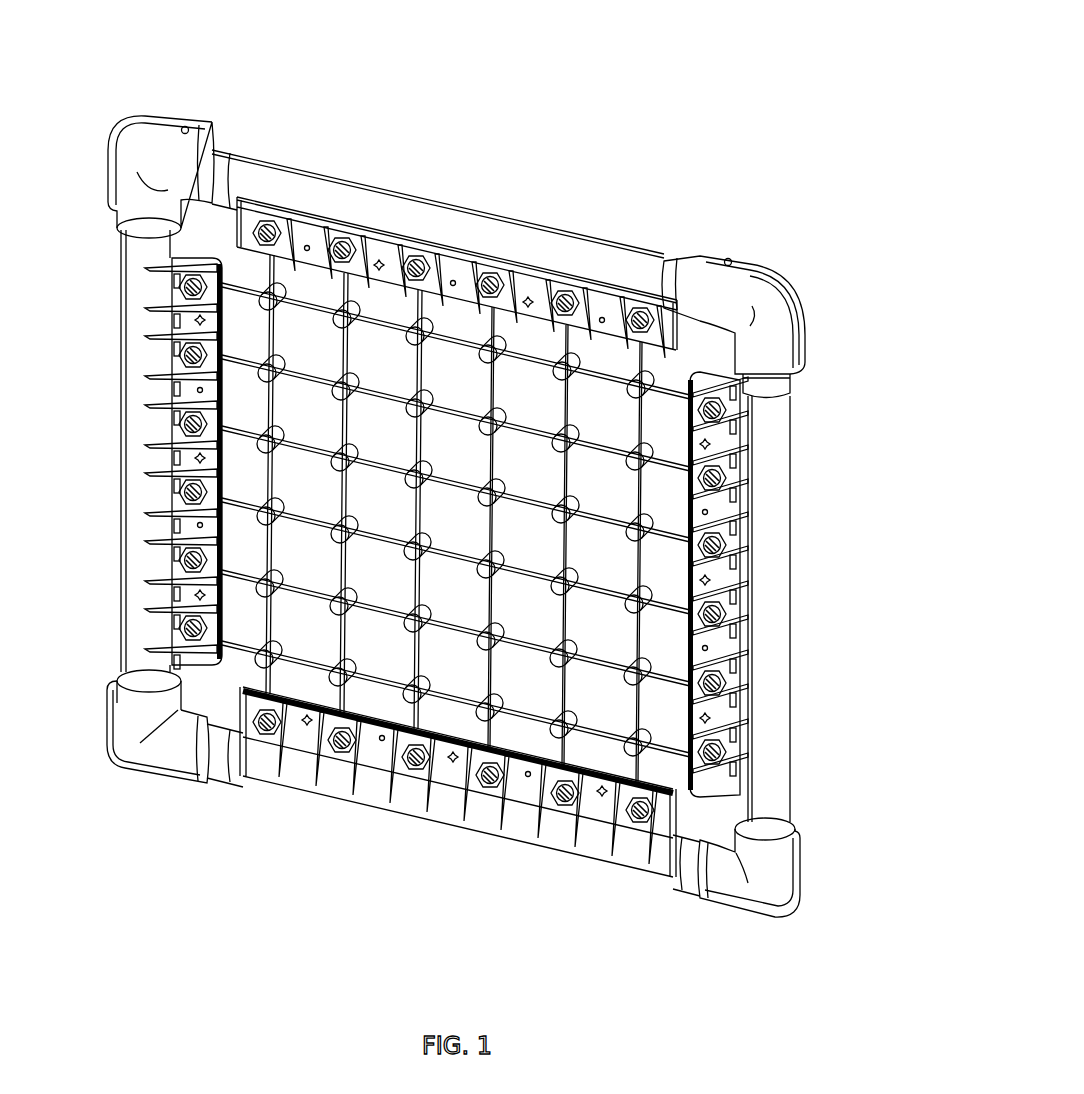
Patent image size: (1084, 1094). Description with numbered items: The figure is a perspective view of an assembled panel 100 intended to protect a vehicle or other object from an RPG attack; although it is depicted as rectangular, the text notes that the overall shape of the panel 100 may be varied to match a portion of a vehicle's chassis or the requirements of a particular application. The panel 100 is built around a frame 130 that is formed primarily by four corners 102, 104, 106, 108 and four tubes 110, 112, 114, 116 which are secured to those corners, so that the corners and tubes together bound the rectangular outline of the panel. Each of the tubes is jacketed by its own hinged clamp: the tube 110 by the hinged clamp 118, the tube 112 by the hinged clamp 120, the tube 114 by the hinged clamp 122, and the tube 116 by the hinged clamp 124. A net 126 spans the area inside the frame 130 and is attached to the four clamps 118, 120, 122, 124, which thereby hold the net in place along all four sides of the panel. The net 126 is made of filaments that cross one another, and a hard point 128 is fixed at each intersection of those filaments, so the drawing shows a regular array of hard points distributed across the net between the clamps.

The panel 100 is at (645, 72).
The corner 102 is at (165, 124).
The corner 104 is at (758, 265).
The corner 106 is at (157, 773).
The corner 108 is at (763, 917).
The tube 110 is at (224, 158).
The tube 112 is at (778, 385).
The tube 114 is at (680, 873).
The tube 116 is at (133, 670).
The hinged clamp 118 is at (382, 183).
The hinged clamp 120 is at (795, 588).
The hinged clamp 122 is at (425, 825).
The hinged clamp 124 is at (128, 388).
The net 126 is at (663, 390).
The hard point 128 is at (567, 428).
The frame 130 is at (580, 214).